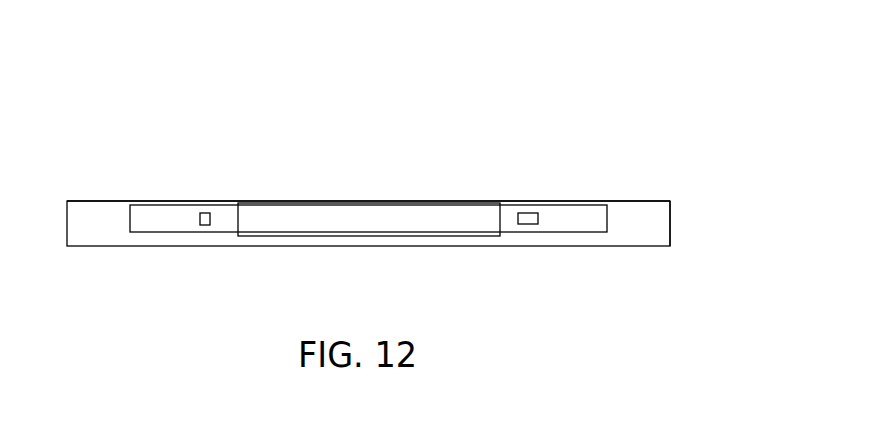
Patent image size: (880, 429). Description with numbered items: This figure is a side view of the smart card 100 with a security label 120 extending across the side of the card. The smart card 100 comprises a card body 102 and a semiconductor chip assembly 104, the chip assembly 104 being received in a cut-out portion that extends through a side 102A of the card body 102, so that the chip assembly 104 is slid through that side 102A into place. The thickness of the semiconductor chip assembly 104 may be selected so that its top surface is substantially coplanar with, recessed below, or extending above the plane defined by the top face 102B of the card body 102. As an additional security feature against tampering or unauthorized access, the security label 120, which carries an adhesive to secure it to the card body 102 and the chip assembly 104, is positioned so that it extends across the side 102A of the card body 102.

The smart card 100 is at (419, 127).
The card body 102 is at (419, 188).
The side of the card body 102A is at (663, 220).
The top face of the card body 102B is at (652, 200).
The semiconductor chip assembly 104 is at (275, 204).
The security label 120 is at (403, 204).